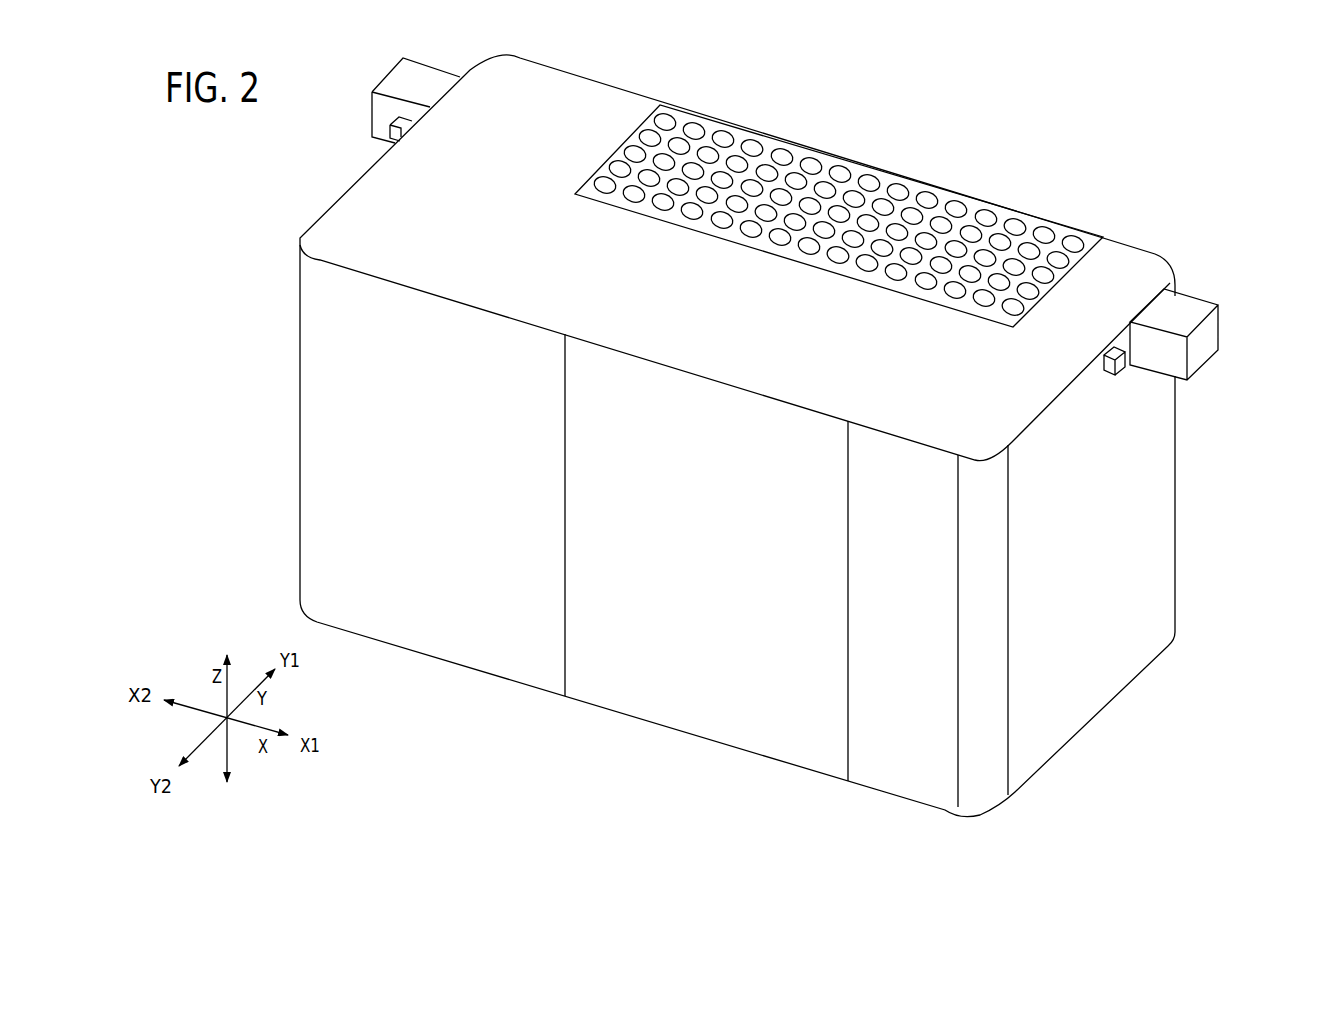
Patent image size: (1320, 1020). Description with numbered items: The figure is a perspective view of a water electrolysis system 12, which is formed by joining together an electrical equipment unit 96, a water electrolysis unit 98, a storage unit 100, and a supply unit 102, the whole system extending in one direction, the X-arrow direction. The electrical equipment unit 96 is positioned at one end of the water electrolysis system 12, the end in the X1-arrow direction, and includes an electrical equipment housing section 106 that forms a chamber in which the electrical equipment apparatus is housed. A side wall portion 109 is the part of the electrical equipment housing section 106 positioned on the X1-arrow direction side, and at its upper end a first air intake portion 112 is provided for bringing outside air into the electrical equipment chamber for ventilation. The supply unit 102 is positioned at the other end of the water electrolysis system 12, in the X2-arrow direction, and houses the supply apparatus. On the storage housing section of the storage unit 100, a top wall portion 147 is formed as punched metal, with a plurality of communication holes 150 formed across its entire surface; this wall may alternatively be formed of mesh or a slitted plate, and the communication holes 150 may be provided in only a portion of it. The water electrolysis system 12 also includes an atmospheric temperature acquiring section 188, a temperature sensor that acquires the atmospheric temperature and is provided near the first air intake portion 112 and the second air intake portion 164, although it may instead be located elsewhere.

The water electrolysis system 12 is at (205, 181).
The electrical equipment unit 96 is at (1136, 257).
The water electrolysis unit 98 is at (798, 289).
The storage unit 100 is at (889, 167).
The supply unit 102 is at (621, 108).
The electrical equipment housing section 106 is at (1173, 262).
The side wall portion 109 is at (1162, 510).
The first air intake portion 112 is at (1213, 331).
The top wall portion 147 is at (950, 198).
The communication holes 150 is at (1038, 276).
The second air intake portion 164 is at (372, 88).
The atmospheric temperature acquiring section 188 is at (392, 124).